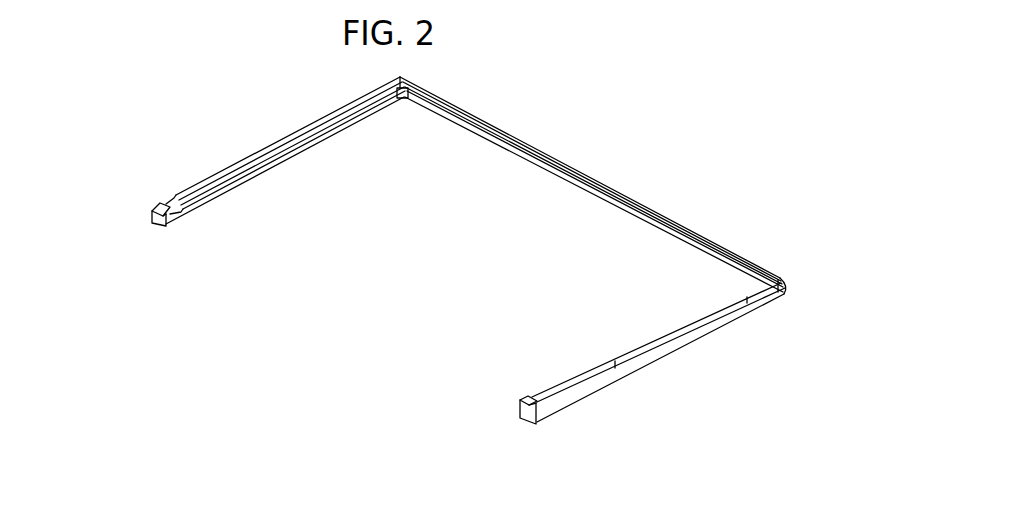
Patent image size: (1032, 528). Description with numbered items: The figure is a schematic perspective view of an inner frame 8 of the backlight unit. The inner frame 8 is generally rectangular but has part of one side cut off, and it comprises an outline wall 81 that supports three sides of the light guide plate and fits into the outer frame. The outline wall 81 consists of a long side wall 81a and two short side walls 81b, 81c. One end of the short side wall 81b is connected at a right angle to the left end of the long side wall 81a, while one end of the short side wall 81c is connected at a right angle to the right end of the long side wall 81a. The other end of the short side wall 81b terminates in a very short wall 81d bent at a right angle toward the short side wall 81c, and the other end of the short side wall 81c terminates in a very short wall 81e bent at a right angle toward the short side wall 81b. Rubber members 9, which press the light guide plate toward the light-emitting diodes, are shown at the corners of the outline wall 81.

The inner frame 8 is at (618, 186).
The outline wall 81 is at (701, 232).
The long side wall 81a is at (523, 140).
The short side wall 81b is at (276, 139).
The short side wall 81c is at (650, 361).
The very short wall 81d is at (156, 219).
The very short wall 81e is at (527, 420).
The rubber member 9 is at (399, 90).